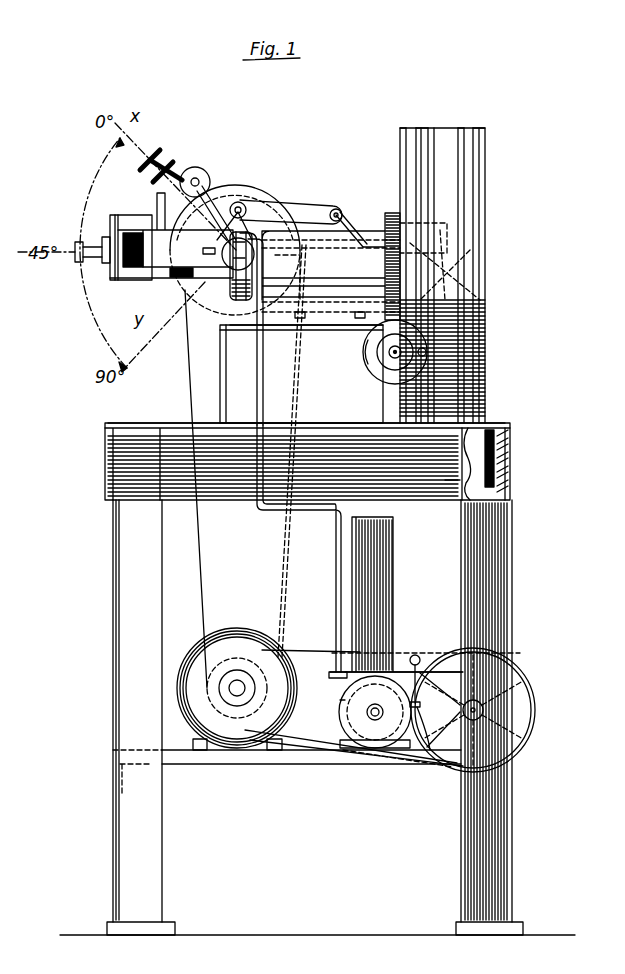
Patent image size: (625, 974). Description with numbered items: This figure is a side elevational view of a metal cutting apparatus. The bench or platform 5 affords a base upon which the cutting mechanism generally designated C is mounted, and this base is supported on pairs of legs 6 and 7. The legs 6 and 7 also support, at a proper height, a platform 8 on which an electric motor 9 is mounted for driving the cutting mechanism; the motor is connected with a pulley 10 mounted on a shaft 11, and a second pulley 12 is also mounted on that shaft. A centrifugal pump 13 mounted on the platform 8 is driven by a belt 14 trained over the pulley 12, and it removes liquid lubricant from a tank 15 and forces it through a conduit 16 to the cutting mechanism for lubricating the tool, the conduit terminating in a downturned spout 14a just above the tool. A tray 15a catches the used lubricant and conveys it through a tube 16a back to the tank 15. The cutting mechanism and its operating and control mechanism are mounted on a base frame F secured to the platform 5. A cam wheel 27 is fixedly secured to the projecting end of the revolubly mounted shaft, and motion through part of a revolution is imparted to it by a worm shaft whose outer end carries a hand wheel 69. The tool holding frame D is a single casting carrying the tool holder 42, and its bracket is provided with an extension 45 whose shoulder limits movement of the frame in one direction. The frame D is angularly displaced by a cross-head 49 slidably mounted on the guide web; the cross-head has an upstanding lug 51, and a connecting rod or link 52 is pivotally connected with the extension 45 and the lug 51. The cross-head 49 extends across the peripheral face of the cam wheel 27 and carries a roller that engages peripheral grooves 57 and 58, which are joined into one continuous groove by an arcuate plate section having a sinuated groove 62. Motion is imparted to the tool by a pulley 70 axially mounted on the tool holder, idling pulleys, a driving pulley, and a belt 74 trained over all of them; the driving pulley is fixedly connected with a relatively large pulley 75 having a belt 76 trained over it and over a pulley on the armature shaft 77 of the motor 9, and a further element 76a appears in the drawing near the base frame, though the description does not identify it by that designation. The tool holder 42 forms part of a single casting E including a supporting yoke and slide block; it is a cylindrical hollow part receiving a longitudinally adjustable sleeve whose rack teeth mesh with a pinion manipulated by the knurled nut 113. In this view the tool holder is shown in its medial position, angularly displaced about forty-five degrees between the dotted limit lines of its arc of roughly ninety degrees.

The bench or platform 5 is at (108, 478).
The leg 6 is at (116, 655).
The leg 7 is at (512, 608).
The platform 8 is at (240, 764).
The electric motor 9 is at (262, 648).
The pulley 10 is at (522, 693).
The shaft 11 is at (515, 675).
The second pulley 12 is at (430, 750).
The centrifugal pump 13 is at (372, 672).
The belt 14 is at (413, 655).
The tank 15 is at (390, 562).
The tray 15a is at (348, 423).
The conduit 16 is at (303, 510).
The tube 16a is at (490, 432).
The cam wheel 27 is at (443, 190).
The tool holder 42 is at (177, 235).
The extension 45 is at (212, 196).
The cross-head 49 is at (450, 300).
The upstanding lug 51 is at (338, 210).
The connecting rod or link 52 is at (305, 203).
The peripheral groove 57 is at (470, 128).
The peripheral groove 58 is at (412, 128).
The sinuated groove 62 is at (457, 280).
The hand wheel 69 is at (365, 360).
The pulley 70 is at (106, 238).
The belt 74 is at (118, 215).
The pulley 75 is at (226, 305).
The belt 76 is at (197, 523).
The belt guard 76a is at (250, 325).
The armature shaft 77 is at (237, 672).
The knurled nut 113 is at (172, 280).
The downturned spout 14a is at (244, 205).
The cutting mechanism C is at (357, 227).
The tool holding frame D is at (165, 152).
The casting E is at (204, 182).
The base frame F is at (222, 372).